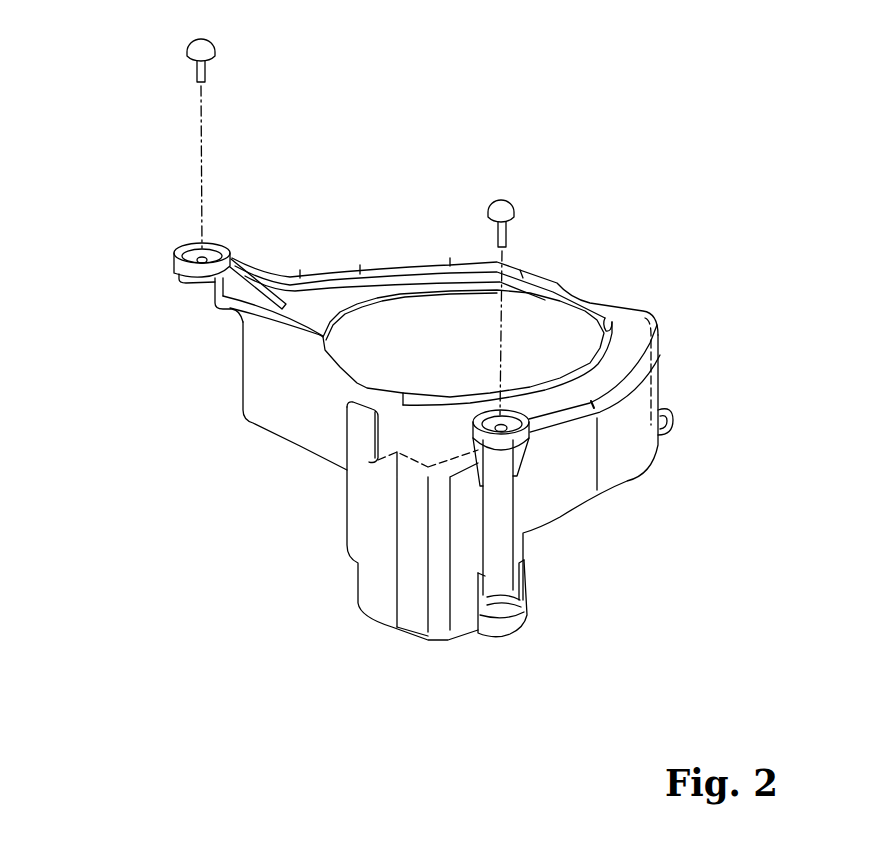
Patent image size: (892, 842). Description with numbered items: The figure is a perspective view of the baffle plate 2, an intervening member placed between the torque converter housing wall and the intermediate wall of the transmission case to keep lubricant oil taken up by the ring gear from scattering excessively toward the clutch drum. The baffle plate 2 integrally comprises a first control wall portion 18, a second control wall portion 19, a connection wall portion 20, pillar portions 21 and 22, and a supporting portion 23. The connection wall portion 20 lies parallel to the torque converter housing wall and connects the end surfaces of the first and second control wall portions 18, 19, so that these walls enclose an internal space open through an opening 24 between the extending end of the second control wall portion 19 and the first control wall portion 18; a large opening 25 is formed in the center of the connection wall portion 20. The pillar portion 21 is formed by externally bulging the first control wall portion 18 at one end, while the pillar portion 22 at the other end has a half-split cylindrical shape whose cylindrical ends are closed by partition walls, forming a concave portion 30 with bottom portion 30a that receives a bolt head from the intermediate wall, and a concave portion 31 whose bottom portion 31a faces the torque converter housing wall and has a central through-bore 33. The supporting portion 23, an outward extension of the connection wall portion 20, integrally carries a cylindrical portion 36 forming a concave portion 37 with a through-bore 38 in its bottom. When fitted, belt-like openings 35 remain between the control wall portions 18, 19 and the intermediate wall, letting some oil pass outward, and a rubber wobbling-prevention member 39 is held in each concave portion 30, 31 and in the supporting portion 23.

The baffle plate 2 is at (637, 160).
The first control wall portion 18 is at (627, 457).
The second control wall portion 19 is at (283, 405).
The connection wall portion 20 is at (625, 323).
The pillar portion 21 is at (667, 370).
The pillar portion 22 is at (528, 570).
The supporting portion 23 is at (200, 328).
The opening 24 is at (404, 330).
The large opening 25 is at (569, 326).
The concave portion 30 is at (503, 628).
The partition wall 30a is at (527, 617).
The concave portion 31 is at (475, 437).
The bottom portion 31a is at (498, 422).
The through-bore 33 is at (508, 409).
The belt-like opening 35 is at (330, 466).
The cylindrical portion 36 is at (247, 275).
The concave portion 37 is at (177, 275).
The through-bore 38 is at (204, 257).
The wobbling-prevention member 39 is at (214, 38).